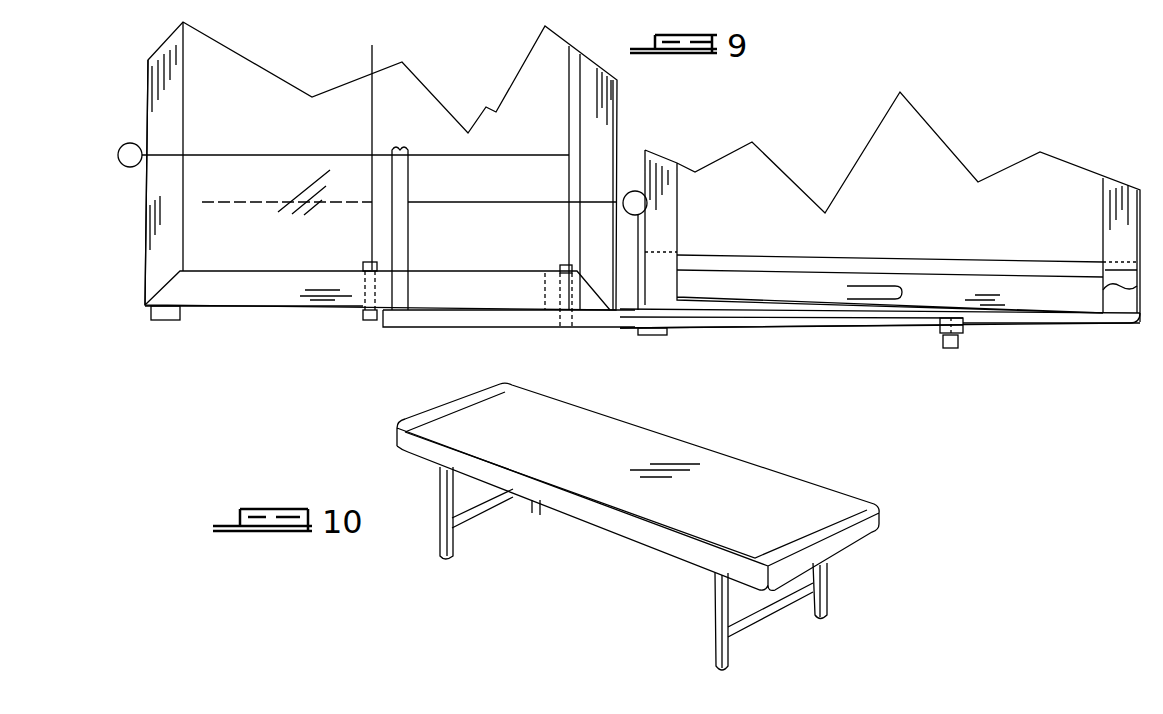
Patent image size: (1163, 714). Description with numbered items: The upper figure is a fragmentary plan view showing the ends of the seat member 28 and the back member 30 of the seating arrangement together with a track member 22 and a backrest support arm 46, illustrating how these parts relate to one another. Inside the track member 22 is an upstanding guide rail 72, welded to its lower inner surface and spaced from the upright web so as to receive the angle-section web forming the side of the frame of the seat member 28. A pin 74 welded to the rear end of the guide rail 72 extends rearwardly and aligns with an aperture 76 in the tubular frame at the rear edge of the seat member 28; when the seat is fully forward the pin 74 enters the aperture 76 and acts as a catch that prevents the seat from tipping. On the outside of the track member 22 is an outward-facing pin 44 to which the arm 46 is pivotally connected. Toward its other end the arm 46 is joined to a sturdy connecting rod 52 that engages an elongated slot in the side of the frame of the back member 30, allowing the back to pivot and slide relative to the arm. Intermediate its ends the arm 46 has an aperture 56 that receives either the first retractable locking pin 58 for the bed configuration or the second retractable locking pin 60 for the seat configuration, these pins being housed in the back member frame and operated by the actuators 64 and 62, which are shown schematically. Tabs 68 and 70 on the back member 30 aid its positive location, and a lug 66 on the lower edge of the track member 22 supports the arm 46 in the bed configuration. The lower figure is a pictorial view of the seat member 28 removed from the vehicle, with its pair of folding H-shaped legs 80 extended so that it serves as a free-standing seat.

In FIG. 9, the track member 22 is at (1015, 322).
In FIG. 9, the seat member 28 is at (922, 151).
In FIG. 10, the seat member 28 is at (785, 488).
In FIG. 9, the back member 30 is at (245, 110).
In FIG. 9, the pin 44 is at (948, 348).
In FIG. 9, the backrest support arm 46 is at (456, 318).
In FIG. 9, the connecting rod 52 is at (410, 242).
In FIG. 9, the aperture 56 is at (562, 328).
In FIG. 9, the first retractable locking pin 58 is at (570, 297).
In FIG. 9, the second retractable locking pin 60 is at (368, 320).
In FIG. 9, the actuator 62 is at (628, 191).
In FIG. 9, the actuator 64 is at (118, 150).
In FIG. 9, the lug 66 is at (677, 330).
In FIG. 9, the tab 68 is at (628, 335).
In FIG. 9, the tab 70 is at (165, 320).
In FIG. 9, the guide rail 72 is at (777, 295).
In FIG. 9, the pin 74 is at (890, 286).
In FIG. 9, the aperture 76 is at (1093, 298).
In FIG. 10, the folding H-shaped legs 80 is at (728, 650).